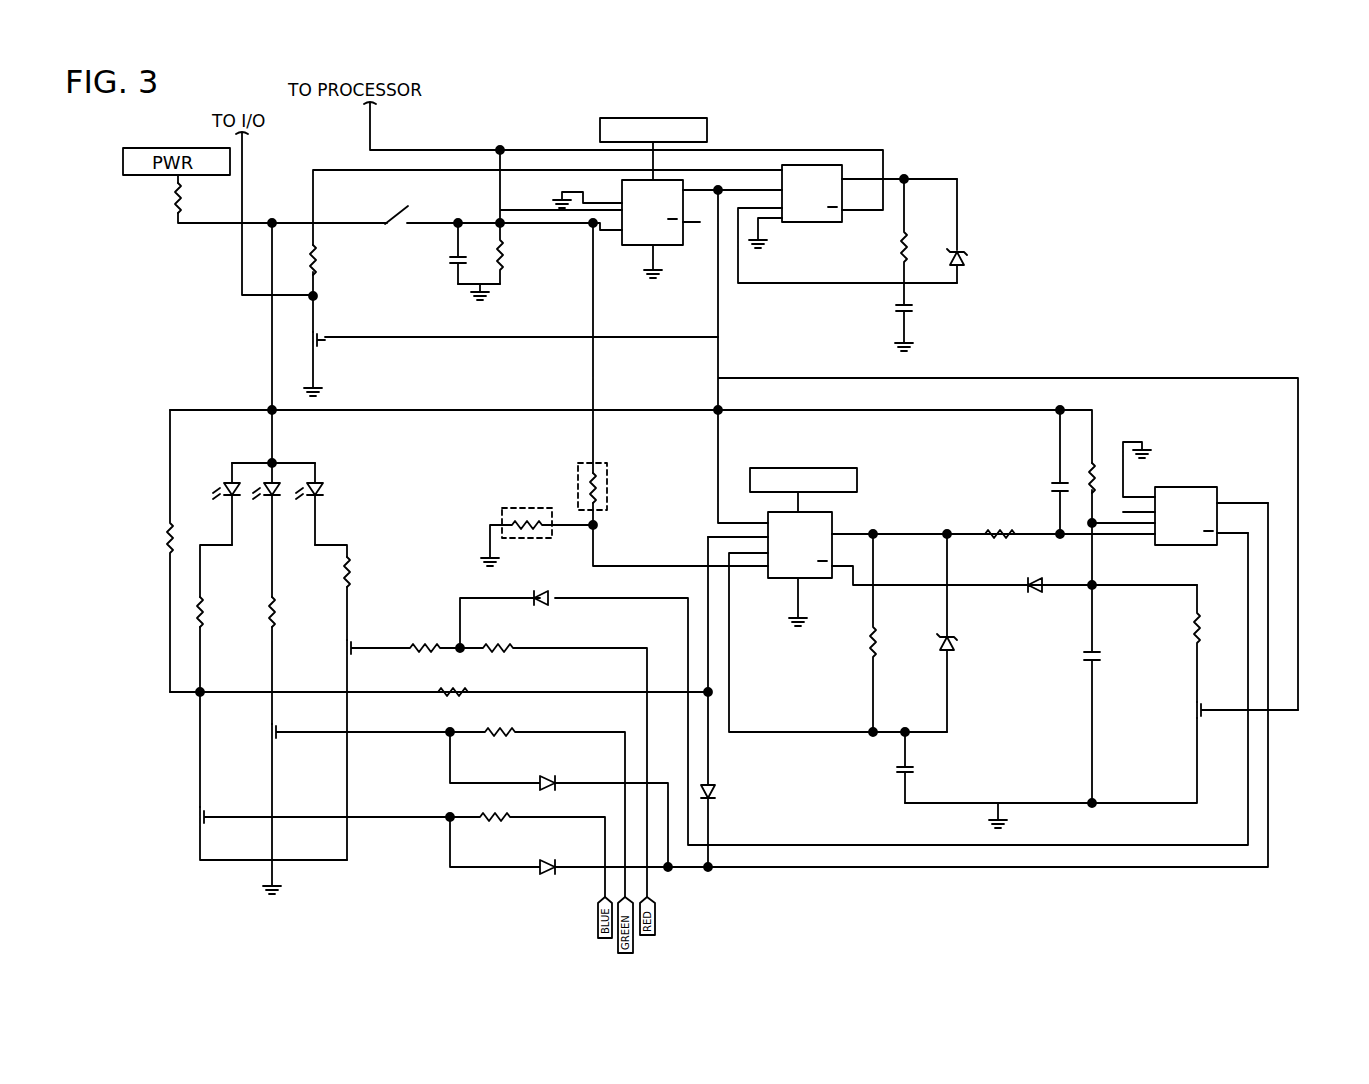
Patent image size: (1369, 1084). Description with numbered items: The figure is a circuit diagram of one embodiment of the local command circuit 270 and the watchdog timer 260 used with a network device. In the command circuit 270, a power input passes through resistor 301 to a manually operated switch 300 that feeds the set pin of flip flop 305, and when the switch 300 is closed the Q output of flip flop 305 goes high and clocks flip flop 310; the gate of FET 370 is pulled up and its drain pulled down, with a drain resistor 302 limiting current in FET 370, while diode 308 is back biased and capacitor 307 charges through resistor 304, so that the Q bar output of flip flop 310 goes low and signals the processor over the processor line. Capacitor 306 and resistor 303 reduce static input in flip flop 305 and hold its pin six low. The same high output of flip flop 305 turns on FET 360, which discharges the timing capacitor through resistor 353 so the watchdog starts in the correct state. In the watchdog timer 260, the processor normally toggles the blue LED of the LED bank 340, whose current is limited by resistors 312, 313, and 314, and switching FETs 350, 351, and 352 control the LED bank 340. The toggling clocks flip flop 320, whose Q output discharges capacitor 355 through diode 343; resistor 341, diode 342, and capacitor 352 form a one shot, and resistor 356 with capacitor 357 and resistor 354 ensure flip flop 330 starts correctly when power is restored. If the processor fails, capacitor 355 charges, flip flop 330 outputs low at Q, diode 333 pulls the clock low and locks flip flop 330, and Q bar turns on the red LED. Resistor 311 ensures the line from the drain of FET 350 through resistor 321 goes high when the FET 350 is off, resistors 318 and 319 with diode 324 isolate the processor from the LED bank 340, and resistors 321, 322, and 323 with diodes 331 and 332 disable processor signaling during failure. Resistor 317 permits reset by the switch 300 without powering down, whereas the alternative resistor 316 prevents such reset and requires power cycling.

The watchdog timer 260 is at (1162, 338).
The command circuit 270 is at (1035, 185).
The switch 300 is at (395, 213).
The resistor 301 is at (180, 208).
The drain resistor 302 is at (313, 266).
The resistor 303 is at (500, 268).
The resistor 304 is at (904, 258).
The flip flop 305 is at (653, 258).
The capacitor 306 is at (455, 273).
The capacitor 307 is at (908, 312).
The diode 308 is at (958, 250).
The flip flop 310 is at (832, 228).
The resistor 311 is at (170, 545).
The resistor 312 is at (200, 618).
The resistor 313 is at (272, 618).
The resistor 314 is at (347, 580).
The resistor 316 is at (515, 520).
The resistor 317 is at (607, 482).
The resistor 318 is at (413, 652).
The resistor 319 is at (495, 650).
The flip flop 320 is at (795, 580).
The resistor 321 is at (458, 692).
The resistor 322 is at (496, 733).
The resistor 323 is at (490, 817).
The diode 324 is at (556, 596).
The flip flop 330 is at (1200, 545).
The diode 331 is at (538, 783).
The diode 332 is at (538, 867).
The diode 333 is at (716, 788).
The LED bank 340 is at (330, 478).
The resistor 341 is at (876, 635).
The diode 342 is at (952, 640).
The diode 343 is at (1038, 585).
The FET 350 is at (200, 805).
The FET 351 is at (270, 738).
The FET 352 is at (350, 657).
The resistor 353 is at (1197, 645).
The resistor 354 is at (1094, 465).
The capacitor 355 is at (1094, 655).
The resistor 356 is at (988, 533).
The capacitor 357 is at (1057, 485).
The FET 360 is at (1195, 710).
The FET 370 is at (320, 345).